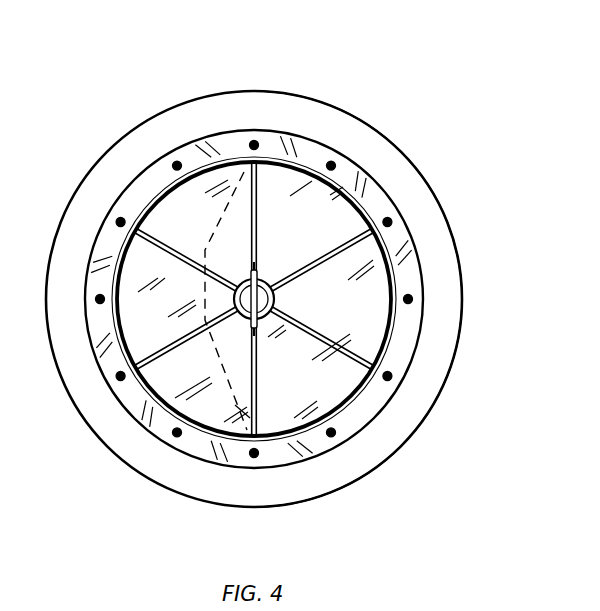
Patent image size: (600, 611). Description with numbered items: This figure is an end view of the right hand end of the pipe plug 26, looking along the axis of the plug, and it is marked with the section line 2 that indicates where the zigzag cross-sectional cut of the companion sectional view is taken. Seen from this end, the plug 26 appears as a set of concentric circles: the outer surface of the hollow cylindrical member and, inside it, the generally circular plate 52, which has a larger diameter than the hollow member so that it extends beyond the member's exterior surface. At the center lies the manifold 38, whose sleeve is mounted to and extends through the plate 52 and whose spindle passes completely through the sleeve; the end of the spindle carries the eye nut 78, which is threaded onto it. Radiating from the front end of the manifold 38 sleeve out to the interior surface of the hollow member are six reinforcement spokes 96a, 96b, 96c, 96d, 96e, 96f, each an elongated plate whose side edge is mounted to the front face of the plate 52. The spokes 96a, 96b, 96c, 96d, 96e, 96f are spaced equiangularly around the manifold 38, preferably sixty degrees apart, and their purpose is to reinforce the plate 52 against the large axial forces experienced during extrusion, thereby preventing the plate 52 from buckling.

The pipe plug 26 is at (392, 110).
The plate 52 is at (308, 385).
The manifold 38 is at (276, 300).
The eye nut 78 is at (262, 272).
The reinforcement spoke 96a is at (248, 200).
The reinforcement spoke 96b is at (162, 244).
The reinforcement spoke 96c is at (142, 364).
The reinforcement spoke 96d is at (250, 385).
The reinforcement spoke 96e is at (357, 357).
The reinforcement spoke 96f is at (345, 244).
The section line 2- 2 is at (254, 163).